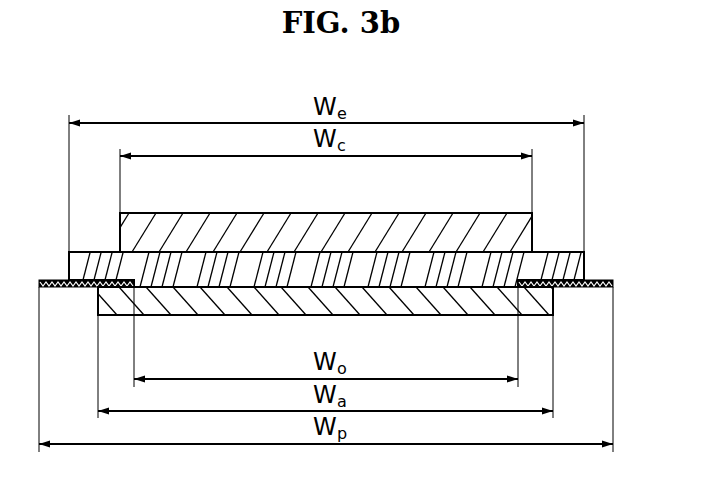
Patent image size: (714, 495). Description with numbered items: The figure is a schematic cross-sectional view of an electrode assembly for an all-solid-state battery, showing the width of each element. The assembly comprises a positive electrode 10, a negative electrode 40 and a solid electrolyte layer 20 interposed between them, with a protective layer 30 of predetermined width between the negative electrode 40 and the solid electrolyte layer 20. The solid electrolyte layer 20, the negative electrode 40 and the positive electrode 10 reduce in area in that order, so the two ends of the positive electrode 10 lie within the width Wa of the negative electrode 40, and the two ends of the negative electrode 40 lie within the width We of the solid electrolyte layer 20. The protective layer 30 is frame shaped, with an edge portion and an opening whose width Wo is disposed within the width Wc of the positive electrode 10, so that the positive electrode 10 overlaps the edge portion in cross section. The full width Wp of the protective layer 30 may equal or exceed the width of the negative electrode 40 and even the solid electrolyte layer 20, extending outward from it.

The positive electrode 10 is at (522, 233).
The solid electrolyte layer 20 is at (577, 267).
The protective layer 30 is at (608, 287).
The negative electrode 40 is at (545, 300).